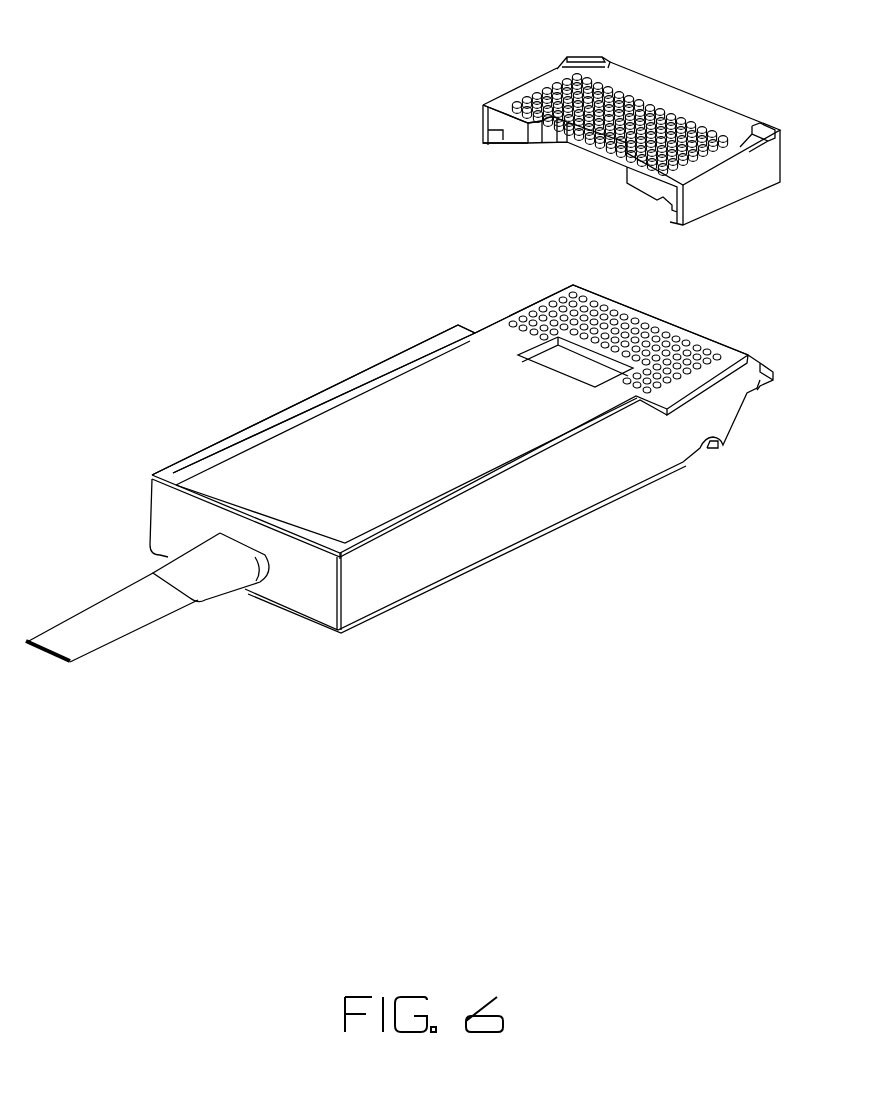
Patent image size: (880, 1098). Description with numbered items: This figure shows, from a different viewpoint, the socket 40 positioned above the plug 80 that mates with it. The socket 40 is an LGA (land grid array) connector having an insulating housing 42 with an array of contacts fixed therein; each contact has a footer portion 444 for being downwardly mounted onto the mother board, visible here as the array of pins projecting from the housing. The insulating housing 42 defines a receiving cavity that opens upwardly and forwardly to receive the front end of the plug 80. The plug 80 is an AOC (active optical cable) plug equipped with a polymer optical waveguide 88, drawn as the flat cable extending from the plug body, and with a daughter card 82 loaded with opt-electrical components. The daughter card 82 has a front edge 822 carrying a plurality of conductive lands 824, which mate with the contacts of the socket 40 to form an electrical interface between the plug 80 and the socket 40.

The socket 40 is at (517, 76).
The insulating housing 42 is at (502, 102).
The footer portion 444 is at (588, 75).
The plug 80 is at (320, 372).
The daughter card 82 is at (415, 388).
The front edge 822 is at (730, 353).
The conductive lands 824 is at (662, 332).
The polymer optical waveguide 88 is at (125, 605).